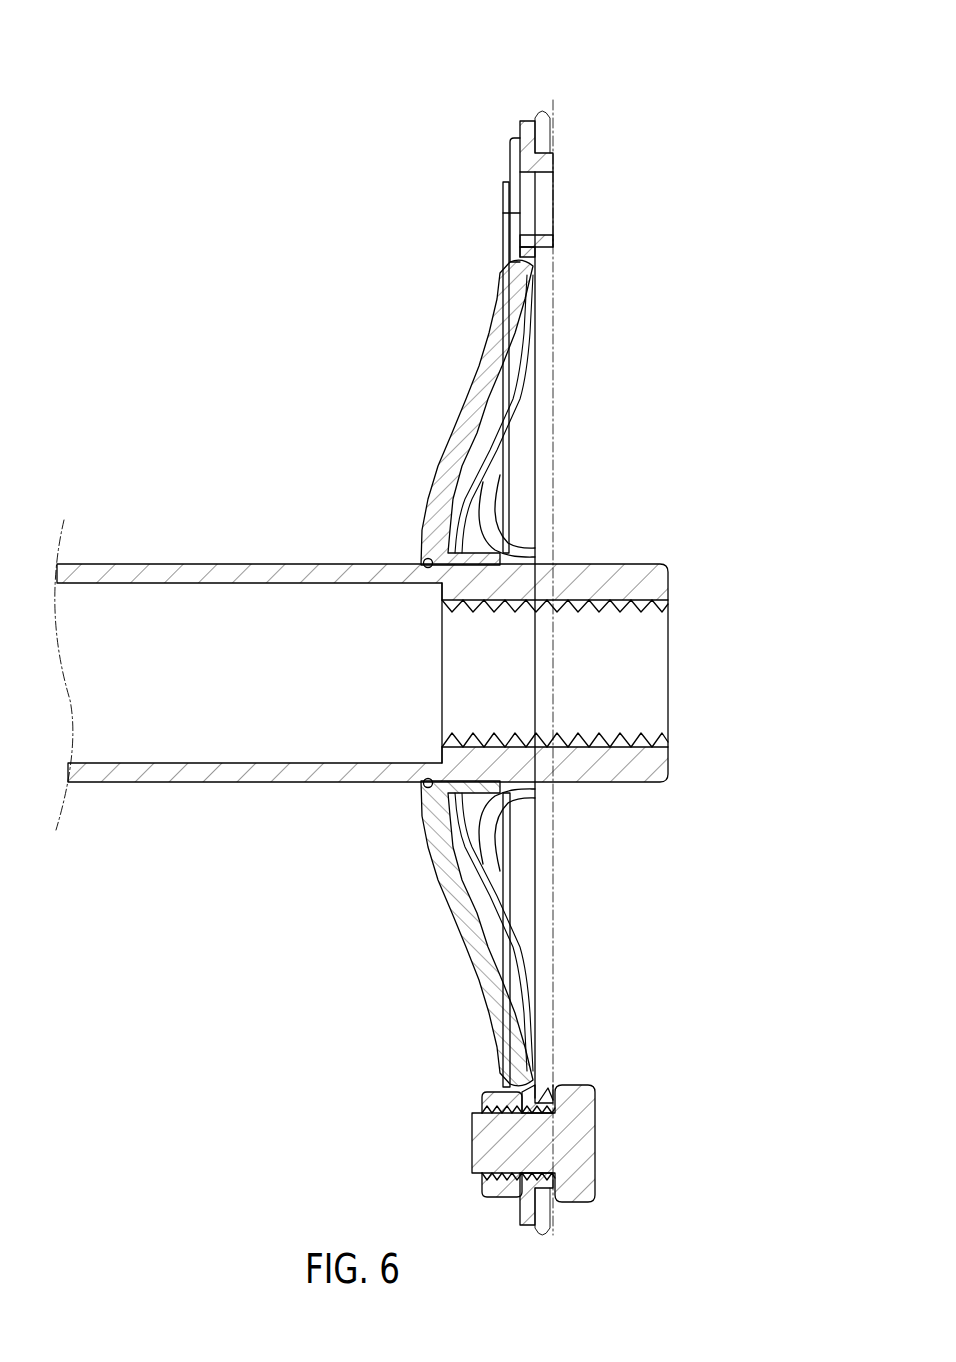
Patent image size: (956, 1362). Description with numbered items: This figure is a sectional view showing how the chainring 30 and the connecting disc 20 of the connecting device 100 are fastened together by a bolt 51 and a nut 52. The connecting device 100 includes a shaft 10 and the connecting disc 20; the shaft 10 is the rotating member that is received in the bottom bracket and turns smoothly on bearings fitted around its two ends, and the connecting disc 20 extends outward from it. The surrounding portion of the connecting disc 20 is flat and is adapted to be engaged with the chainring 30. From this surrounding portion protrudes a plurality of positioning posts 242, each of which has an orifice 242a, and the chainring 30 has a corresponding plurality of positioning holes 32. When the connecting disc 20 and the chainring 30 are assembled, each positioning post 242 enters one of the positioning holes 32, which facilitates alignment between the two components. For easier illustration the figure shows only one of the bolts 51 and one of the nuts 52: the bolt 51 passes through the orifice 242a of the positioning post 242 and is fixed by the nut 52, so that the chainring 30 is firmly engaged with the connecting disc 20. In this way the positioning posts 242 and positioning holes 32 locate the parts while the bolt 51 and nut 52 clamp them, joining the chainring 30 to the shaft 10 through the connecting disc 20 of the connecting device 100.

The connecting device 100 is at (147, 308).
The shaft 10 is at (245, 563).
The connecting disc 20 is at (482, 304).
The chainring 30 is at (549, 98).
The positioning hole 32 is at (545, 150).
The positioning post 242 is at (553, 163).
The orifice 242a is at (553, 231).
The bolt 51 is at (596, 1143).
The nut 52 is at (478, 1182).